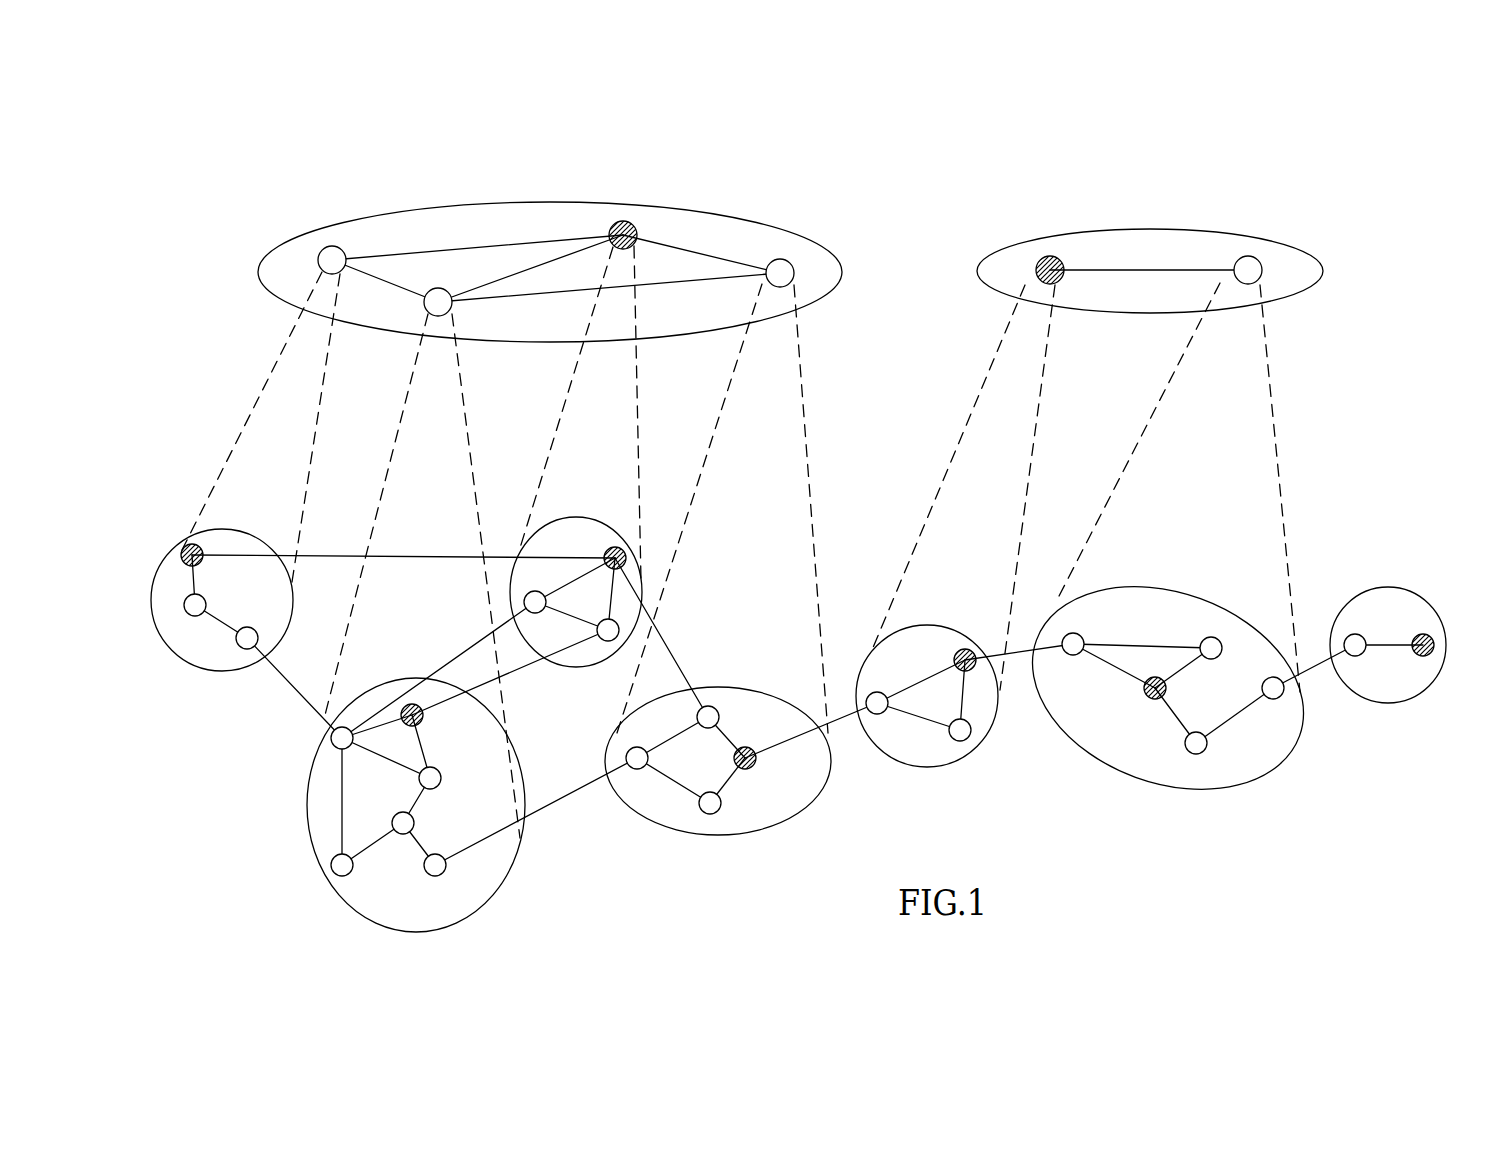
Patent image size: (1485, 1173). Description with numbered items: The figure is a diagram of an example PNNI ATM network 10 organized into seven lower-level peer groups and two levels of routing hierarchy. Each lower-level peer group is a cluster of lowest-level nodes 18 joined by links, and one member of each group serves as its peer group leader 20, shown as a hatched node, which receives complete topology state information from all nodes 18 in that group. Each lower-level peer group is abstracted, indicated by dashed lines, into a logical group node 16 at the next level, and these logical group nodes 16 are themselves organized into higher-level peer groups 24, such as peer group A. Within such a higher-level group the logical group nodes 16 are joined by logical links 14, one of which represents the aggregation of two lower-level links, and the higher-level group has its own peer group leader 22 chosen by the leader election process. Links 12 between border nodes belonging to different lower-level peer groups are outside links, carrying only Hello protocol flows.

The network 10 is at (798, 543).
The outside links 12 is at (665, 655).
The link 14 is at (548, 238).
The logical group nodes 16 is at (327, 245).
The nodes 18 is at (190, 614).
The peer group leader 20 is at (183, 547).
The peer group leader 22 is at (1040, 262).
The peer groups 24 is at (720, 213).